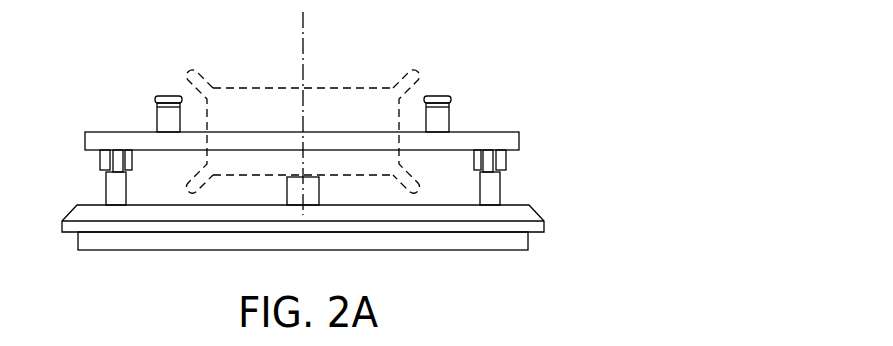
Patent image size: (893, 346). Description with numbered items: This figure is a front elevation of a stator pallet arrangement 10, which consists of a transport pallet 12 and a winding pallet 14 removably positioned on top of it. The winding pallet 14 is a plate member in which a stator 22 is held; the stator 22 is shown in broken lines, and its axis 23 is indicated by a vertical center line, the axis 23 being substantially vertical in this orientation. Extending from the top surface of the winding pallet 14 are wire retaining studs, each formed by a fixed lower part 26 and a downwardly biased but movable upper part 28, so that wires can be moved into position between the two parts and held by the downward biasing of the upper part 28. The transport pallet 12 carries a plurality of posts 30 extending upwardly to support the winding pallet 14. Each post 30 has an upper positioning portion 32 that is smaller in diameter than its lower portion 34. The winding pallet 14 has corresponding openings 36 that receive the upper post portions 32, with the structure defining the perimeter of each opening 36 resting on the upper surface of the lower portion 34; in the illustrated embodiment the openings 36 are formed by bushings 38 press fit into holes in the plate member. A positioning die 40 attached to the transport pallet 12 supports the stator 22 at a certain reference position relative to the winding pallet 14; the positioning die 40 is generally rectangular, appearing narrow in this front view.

The pallet arrangement 10 is at (578, 131).
The transport pallet 12 is at (70, 210).
The winding pallet 14 is at (102, 131).
The stator 22 is at (431, 53).
The axis 23 is at (300, 26).
The fixed lower part 26 is at (449, 118).
The movable upper part 28 is at (450, 99).
The posts 30 is at (106, 188).
The upper positioning portion 32 is at (503, 157).
The lower portion 34 is at (500, 195).
The openings 36 is at (117, 170).
The bushings 38 is at (100, 155).
The positioning die 40 is at (319, 186).